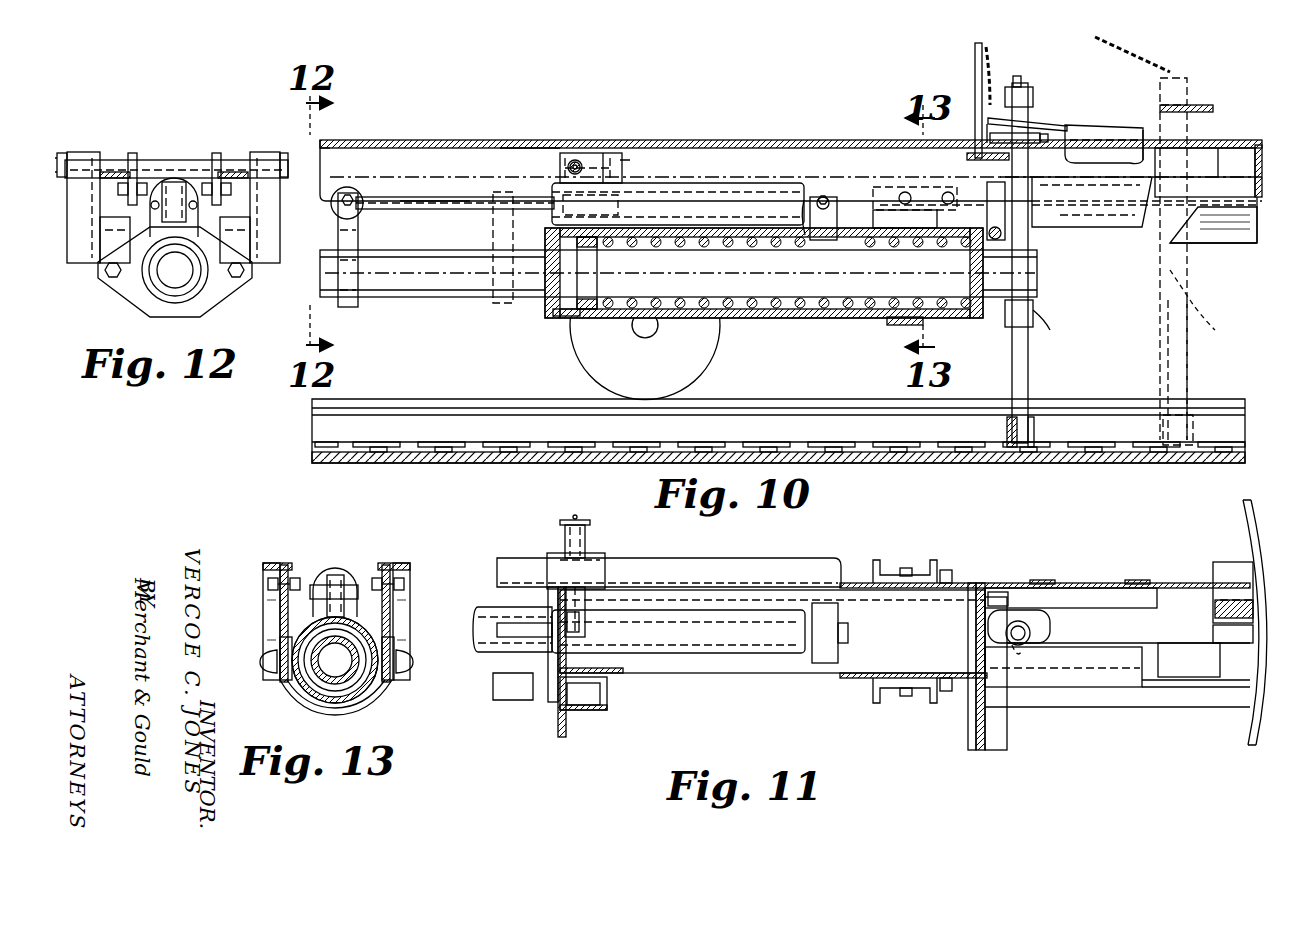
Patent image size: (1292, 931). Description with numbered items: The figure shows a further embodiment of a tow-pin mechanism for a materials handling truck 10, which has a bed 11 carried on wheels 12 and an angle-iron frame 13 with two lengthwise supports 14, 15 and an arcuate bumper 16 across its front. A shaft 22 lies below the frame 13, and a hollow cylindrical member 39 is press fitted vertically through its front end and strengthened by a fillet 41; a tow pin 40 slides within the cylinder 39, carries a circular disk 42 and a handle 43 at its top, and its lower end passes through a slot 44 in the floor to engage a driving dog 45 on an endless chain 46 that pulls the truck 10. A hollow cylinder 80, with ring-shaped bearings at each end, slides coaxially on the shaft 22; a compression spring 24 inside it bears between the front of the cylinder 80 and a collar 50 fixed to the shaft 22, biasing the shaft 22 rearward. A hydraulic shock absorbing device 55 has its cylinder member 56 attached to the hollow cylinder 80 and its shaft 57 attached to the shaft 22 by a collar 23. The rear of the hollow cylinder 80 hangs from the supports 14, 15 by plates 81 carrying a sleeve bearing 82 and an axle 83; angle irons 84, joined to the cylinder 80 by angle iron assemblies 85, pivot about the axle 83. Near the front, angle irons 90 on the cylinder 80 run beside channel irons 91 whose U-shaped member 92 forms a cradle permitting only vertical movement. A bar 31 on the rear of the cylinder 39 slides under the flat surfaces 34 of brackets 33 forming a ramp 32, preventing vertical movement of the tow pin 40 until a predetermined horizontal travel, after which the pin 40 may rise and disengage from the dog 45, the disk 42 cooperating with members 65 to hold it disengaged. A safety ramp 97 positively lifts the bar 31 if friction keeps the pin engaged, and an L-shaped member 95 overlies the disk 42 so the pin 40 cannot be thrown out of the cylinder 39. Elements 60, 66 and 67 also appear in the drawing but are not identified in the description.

In FIG. 10, the materials handling truck 10 is at (510, 134).
In FIG. 10, the bed 11 is at (557, 140).
In FIG. 10, the wheels 12 is at (696, 365).
In FIG. 10, the frame 13 is at (693, 155).
In FIG. 10, the support member 14 is at (455, 187).
In FIG. 12, the support member 14 is at (118, 175).
In FIG. 13, the support member 14 is at (390, 565).
In FIG. 11, the support member 14 is at (510, 558).
In FIG. 12, the support member 15 is at (235, 175).
In FIG. 13, the support member 15 is at (276, 565).
In FIG. 11, the support member 15 is at (503, 700).
In FIG. 10, the arcuate-shaped bumper 16 is at (1214, 225).
In FIG. 11, the arcuate-shaped bumper 16 is at (1250, 517).
In FIG. 10, the shaft 22 is at (473, 273).
In FIG. 12, the shaft 22 is at (163, 290).
In FIG. 13, the shaft 22 is at (352, 678).
In FIG. 11, the shaft 22 is at (493, 657).
In FIG. 10, the collar 23 is at (356, 310).
In FIG. 12, the collar 23 is at (180, 297).
In FIG. 10, the compression spring 24 is at (760, 318).
In FIG. 13, the compression spring 24 is at (335, 690).
In FIG. 10, the bar 31 is at (1005, 233).
In FIG. 11, the bar 31 is at (1003, 590).
In FIG. 10, the ramp 32 is at (1130, 233).
In FIG. 11, the ramp 32 is at (1103, 586).
In FIG. 10, the brackets 33 is at (1125, 228).
In FIG. 11, the brackets 33 is at (1147, 586).
In FIG. 10, the flat surfaces 34 is at (1103, 228).
In FIG. 10, the cylinder 39 is at (1040, 318).
In FIG. 10, the tow pin 40 is at (1030, 380).
In FIG. 11, the tow pin 40 is at (1023, 660).
In FIG. 10, the fillet 41 is at (1008, 316).
In FIG. 10, the circular disk 42 is at (990, 138).
In FIG. 11, the circular disk 42 is at (1048, 625).
In FIG. 10, the handle 43 is at (1010, 100).
In FIG. 11, the handle 43 is at (1017, 625).
In FIG. 10, the slot 44 is at (450, 402).
In FIG. 10, the driving dog 45 is at (1007, 430).
In FIG. 10, the endless chain 46 is at (748, 440).
In FIG. 10, the collar 50 is at (567, 318).
In FIG. 10, the hydraulic shock absorbing device 55 is at (720, 183).
In FIG. 12, the hydraulic shock absorbing device 55 is at (174, 178).
In FIG. 13, the hydraulic shock absorbing device 55 is at (335, 566).
In FIG. 11, the hydraulic shock absorbing device 55 is at (728, 654).
In FIG. 10, the cylinder member 56 is at (814, 200).
In FIG. 11, the cylinder member 56 is at (812, 617).
In FIG. 10, the shaft 57 is at (422, 200).
In FIG. 11, the shaft 57 is at (503, 623).
In FIG. 10, the rail extension 60 is at (1246, 145).
In FIG. 10, the member 65 is at (1100, 122).
In FIG. 11, the member 65 is at (1082, 670).
In FIG. 10, the handle 66 is at (1048, 120).
In FIG. 10, the lug 67 is at (1146, 140).
In FIG. 10, the hollow cylinder 80 is at (557, 318).
In FIG. 12, the hollow cylinder 80 is at (205, 298).
In FIG. 13, the hollow cylinder 80 is at (311, 694).
In FIG. 11, the hollow cylinder 80 is at (781, 675).
In FIG. 10, the plates 81 is at (618, 152).
In FIG. 12, the plates 81 is at (135, 152).
In FIG. 10, the sleeve bearing 82 is at (582, 162).
In FIG. 12, the sleeve bearing 82 is at (105, 163).
In FIG. 11, the sleeve bearing 82 is at (585, 622).
In FIG. 10, the axle 83 is at (580, 160).
In FIG. 12, the axle 83 is at (62, 160).
In FIG. 11, the axle 83 is at (577, 518).
In FIG. 10, the angle irons 84 is at (622, 164).
In FIG. 12, the angle irons 84 is at (80, 263).
In FIG. 11, the angle irons 84 is at (560, 533).
In FIG. 12, the angle iron assemblies 85 is at (103, 292).
In FIG. 13, the angle irons 90 is at (282, 688).
In FIG. 11, the angle irons 90 is at (970, 583).
In FIG. 13, the channel irons 91 is at (267, 620).
In FIG. 11, the channel irons 91 is at (873, 560).
In FIG. 10, the U-shaped member 92 is at (893, 320).
In FIG. 13, the U-shaped member 92 is at (272, 682).
In FIG. 11, the U-shaped member 92 is at (922, 570).
In FIG. 10, the L-shaped member 95 is at (1205, 104).
In FIG. 11, the L-shaped member 95 is at (1185, 665).
In FIG. 10, the safety ramp 97 is at (1244, 244).
In FIG. 11, the safety ramp 97 is at (1192, 602).